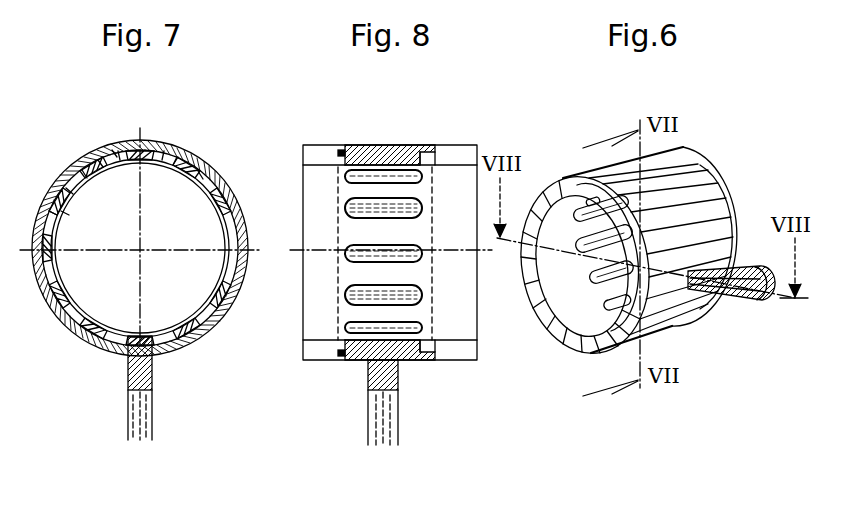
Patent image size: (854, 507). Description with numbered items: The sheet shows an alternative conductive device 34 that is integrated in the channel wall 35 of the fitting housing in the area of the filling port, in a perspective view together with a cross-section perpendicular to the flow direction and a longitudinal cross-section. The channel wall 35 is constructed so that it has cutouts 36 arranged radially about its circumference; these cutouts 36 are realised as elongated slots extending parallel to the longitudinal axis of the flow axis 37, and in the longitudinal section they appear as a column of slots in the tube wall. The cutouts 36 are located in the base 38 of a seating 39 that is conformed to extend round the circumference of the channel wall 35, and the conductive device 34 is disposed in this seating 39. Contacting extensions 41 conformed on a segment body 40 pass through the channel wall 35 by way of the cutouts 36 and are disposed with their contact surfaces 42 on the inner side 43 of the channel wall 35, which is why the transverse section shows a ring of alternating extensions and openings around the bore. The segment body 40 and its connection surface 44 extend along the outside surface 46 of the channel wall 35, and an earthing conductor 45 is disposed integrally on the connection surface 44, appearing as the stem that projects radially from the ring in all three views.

In FIG. 7, the conductive device 34 is at (91, 140).
In FIG. 8, the conductive device 34 is at (393, 140).
In FIG. 6, the conductive device 34 is at (694, 193).
In FIG. 8, the channel wall 35 is at (478, 150).
In FIG. 6, the channel wall 35 is at (567, 178).
In FIG. 8, the cutouts 36 is at (400, 216).
In FIG. 6, the cutouts 36 is at (598, 255).
In FIG. 8, the flow axis 37 is at (301, 262).
In FIG. 8, the base 38 is at (340, 147).
In FIG. 8, the seating 39 is at (357, 140).
In FIG. 7, the segment body 40 is at (193, 140).
In FIG. 8, the segment body 40 is at (438, 150).
In FIG. 6, the segment body 40 is at (714, 213).
In FIG. 7, the contacting extensions 41 is at (143, 168).
In FIG. 7, the contact surfaces 42 is at (97, 170).
In FIG. 7, the inner side 43 is at (67, 257).
In FIG. 7, the connection surface 44 is at (93, 345).
In FIG. 8, the connection surface 44 is at (350, 360).
In FIG. 7, the earthing conductor 45 is at (152, 380).
In FIG. 8, the earthing conductor 45 is at (398, 425).
In FIG. 6, the earthing conductor 45 is at (735, 300).
In FIG. 8, the outside surface 46 is at (310, 145).